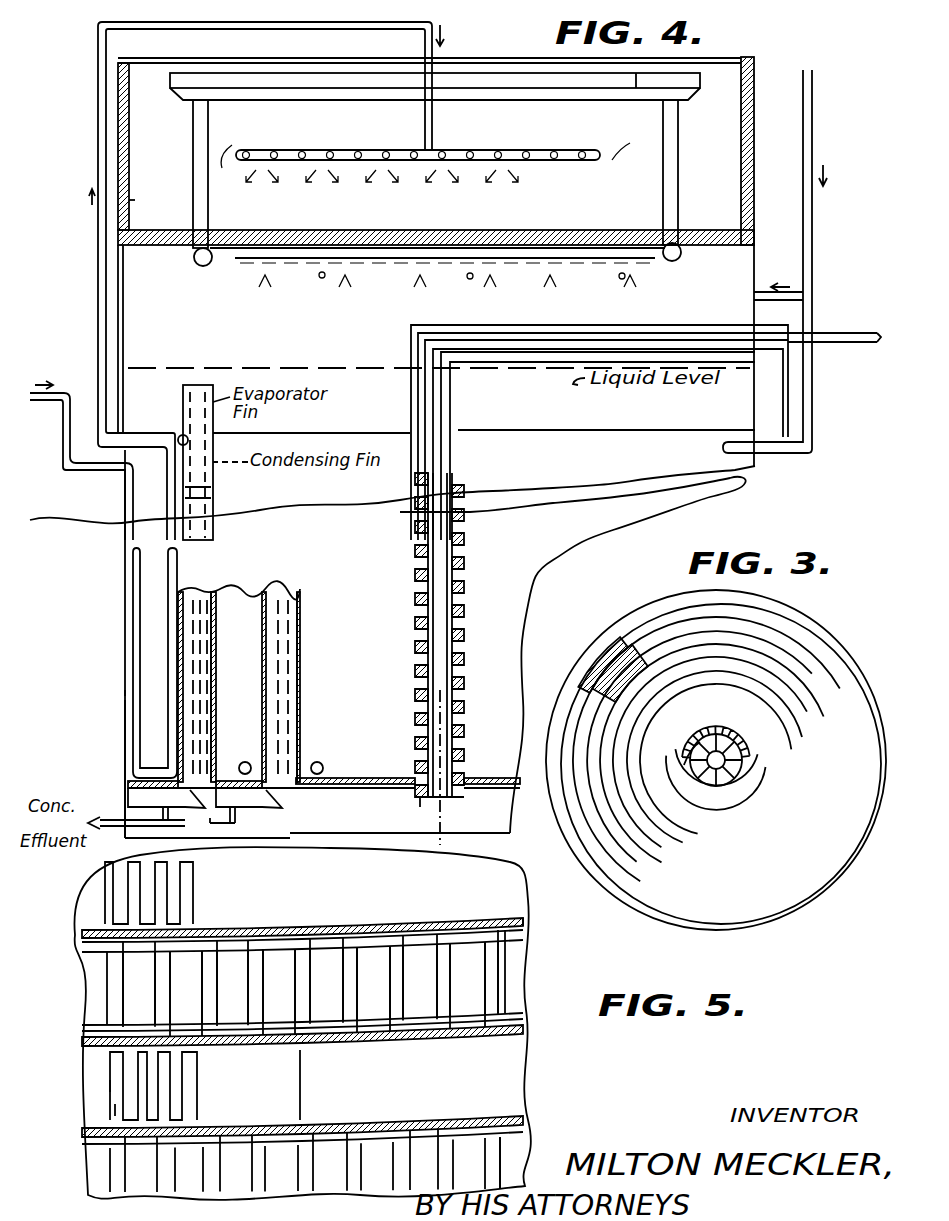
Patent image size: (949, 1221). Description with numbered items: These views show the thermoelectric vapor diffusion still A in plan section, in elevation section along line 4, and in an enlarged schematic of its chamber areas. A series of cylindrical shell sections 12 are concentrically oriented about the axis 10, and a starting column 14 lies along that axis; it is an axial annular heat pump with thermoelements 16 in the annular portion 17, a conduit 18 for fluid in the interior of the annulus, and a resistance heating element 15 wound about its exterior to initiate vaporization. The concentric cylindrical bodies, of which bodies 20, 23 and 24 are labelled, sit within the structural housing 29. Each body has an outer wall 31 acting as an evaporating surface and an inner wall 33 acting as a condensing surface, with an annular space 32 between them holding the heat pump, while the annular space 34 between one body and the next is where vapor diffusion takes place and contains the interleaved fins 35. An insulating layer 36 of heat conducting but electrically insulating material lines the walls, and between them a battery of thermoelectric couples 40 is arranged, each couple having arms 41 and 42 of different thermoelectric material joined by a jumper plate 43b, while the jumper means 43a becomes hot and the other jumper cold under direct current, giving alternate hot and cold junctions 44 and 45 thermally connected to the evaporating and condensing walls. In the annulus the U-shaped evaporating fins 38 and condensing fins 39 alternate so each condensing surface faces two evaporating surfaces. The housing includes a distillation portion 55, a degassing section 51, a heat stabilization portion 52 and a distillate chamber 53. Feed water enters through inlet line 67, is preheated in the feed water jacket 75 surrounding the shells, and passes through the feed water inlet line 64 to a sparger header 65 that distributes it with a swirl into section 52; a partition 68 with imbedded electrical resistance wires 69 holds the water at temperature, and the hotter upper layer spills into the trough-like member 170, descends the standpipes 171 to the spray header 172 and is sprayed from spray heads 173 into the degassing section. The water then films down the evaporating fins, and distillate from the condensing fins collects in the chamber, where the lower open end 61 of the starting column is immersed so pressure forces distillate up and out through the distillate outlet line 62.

In FIG. 4, the axis 10 is at (445, 813).
In FIG. 3, the axis 10 is at (716, 771).
In FIG. 4, the cylindrical shell sections 12 is at (259, 583).
In FIG. 5, the cylindrical shell sections 12 is at (545, 989).
In FIG. 4, the starting column 14 is at (459, 635).
In FIG. 3, the starting column 14 is at (760, 767).
In FIG. 4, the resistance heating element 15 is at (458, 581).
In FIG. 4, the thermoelements 16 is at (455, 623).
In FIG. 4, the annular portion 17 is at (461, 756).
In FIG. 4, the conduit 18 is at (446, 729).
In FIG. 3, the cylindrical body 20 is at (736, 729).
In FIG. 3, the cylindrical body 23 is at (666, 646).
In FIG. 3, the cylindrical body 24 is at (665, 612).
In FIG. 4, the structural housing 29 is at (125, 740).
In FIG. 4, the outer wall 31 is at (214, 690).
In FIG. 5, the outer wall 31 is at (510, 1050).
In FIG. 3, the annular space 32 is at (778, 623).
In FIG. 5, the annular space 32 is at (330, 995).
In FIG. 4, the inner wall 33 is at (262, 745).
In FIG. 5, the inner wall 33 is at (523, 945).
In FIG. 3, the annular space 34 is at (836, 646).
In FIG. 5, the annular space 34 is at (363, 1115).
In FIG. 4, the interleaved fins 35 is at (288, 681).
In FIG. 3, the interleaved fins 35 is at (686, 770).
In FIG. 5, the interleaved fins 35 is at (208, 892).
In FIG. 5, the insulating layer 36 is at (520, 942).
In FIG. 4, the evaporating fins 38 is at (203, 723).
In FIG. 3, the evaporating fins 38 is at (590, 681).
In FIG. 5, the evaporating fins 38 is at (110, 1086).
In FIG. 4, the condensing fins 39 is at (195, 652).
In FIG. 3, the condensing fins 39 is at (586, 650).
In FIG. 5, the condensing fins 39 is at (115, 1110).
In FIG. 5, the thermoelectric couples 40 is at (480, 1003).
In FIG. 5, the arm 41 is at (420, 1006).
In FIG. 5, the arm 42 is at (370, 1004).
In FIG. 5, the jumper means 43a is at (320, 1047).
In FIG. 5, the jumper plate 43b is at (376, 929).
In FIG. 5, the hot thermocouple junction 44 is at (400, 1045).
In FIG. 5, the cold thermocouple junction 45 is at (398, 929).
In FIG. 4, the degassing section 51 is at (395, 424).
In FIG. 4, the heat stabilization portion 52 is at (175, 176).
In FIG. 4, the distillate chamber 53 is at (366, 825).
In FIG. 4, the distillation portion 55 is at (335, 494).
In FIG. 4, the lower open end 61 is at (428, 801).
In FIG. 4, the distillate outlet line 62 is at (845, 333).
In FIG. 4, the feed water inlet line 64 is at (118, 97).
In FIG. 4, the sparger header 65 is at (556, 150).
In FIG. 4, the inlet line 67 is at (65, 394).
In FIG. 4, the partition 68 is at (730, 246).
In FIG. 4, the electrical resistance wires 69 is at (682, 252).
In FIG. 4, the feed water jacket 75 is at (131, 637).
In FIG. 4, the trough-like member 170 is at (700, 78).
In FIG. 4, the standpipes 171 is at (208, 134).
In FIG. 4, the spray header 172 is at (575, 259).
In FIG. 4, the spray heads 173 is at (270, 262).
In FIG. 4, the thermoelectric vapor diffusion still A is at (116, 698).
In FIG. 3, the section line 4- 4 is at (585, 625).